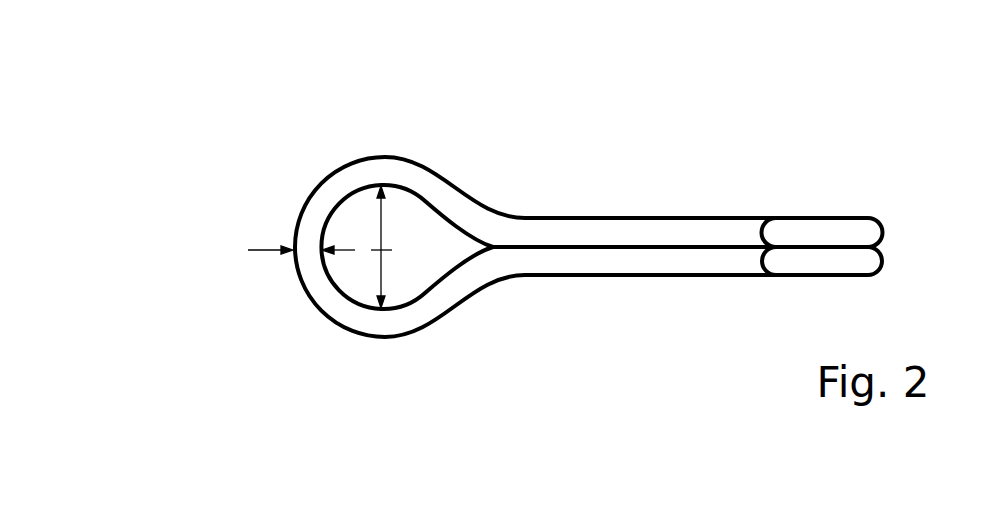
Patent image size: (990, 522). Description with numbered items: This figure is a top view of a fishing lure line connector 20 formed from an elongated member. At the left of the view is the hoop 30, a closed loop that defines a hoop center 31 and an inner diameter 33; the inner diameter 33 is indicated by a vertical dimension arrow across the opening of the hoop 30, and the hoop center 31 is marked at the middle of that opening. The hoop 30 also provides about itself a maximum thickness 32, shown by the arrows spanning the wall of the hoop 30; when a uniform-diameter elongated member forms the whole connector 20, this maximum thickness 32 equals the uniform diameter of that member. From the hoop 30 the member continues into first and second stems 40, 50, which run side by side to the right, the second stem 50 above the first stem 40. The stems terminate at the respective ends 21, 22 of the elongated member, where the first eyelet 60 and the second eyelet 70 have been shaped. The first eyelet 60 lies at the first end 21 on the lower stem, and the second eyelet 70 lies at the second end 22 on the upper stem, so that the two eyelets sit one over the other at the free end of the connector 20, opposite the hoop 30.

The connector 20 is at (325, 122).
The hoop 30 is at (357, 317).
The hoop center 31 is at (385, 242).
The maximum thickness 32 is at (270, 247).
The inner diameter 33 is at (382, 212).
The first stem 40 is at (578, 262).
The second stem 50 is at (597, 227).
The first end 21 is at (780, 260).
The second end 22 is at (782, 233).
The first eyelet 60 is at (857, 260).
The second eyelet 70 is at (863, 225).